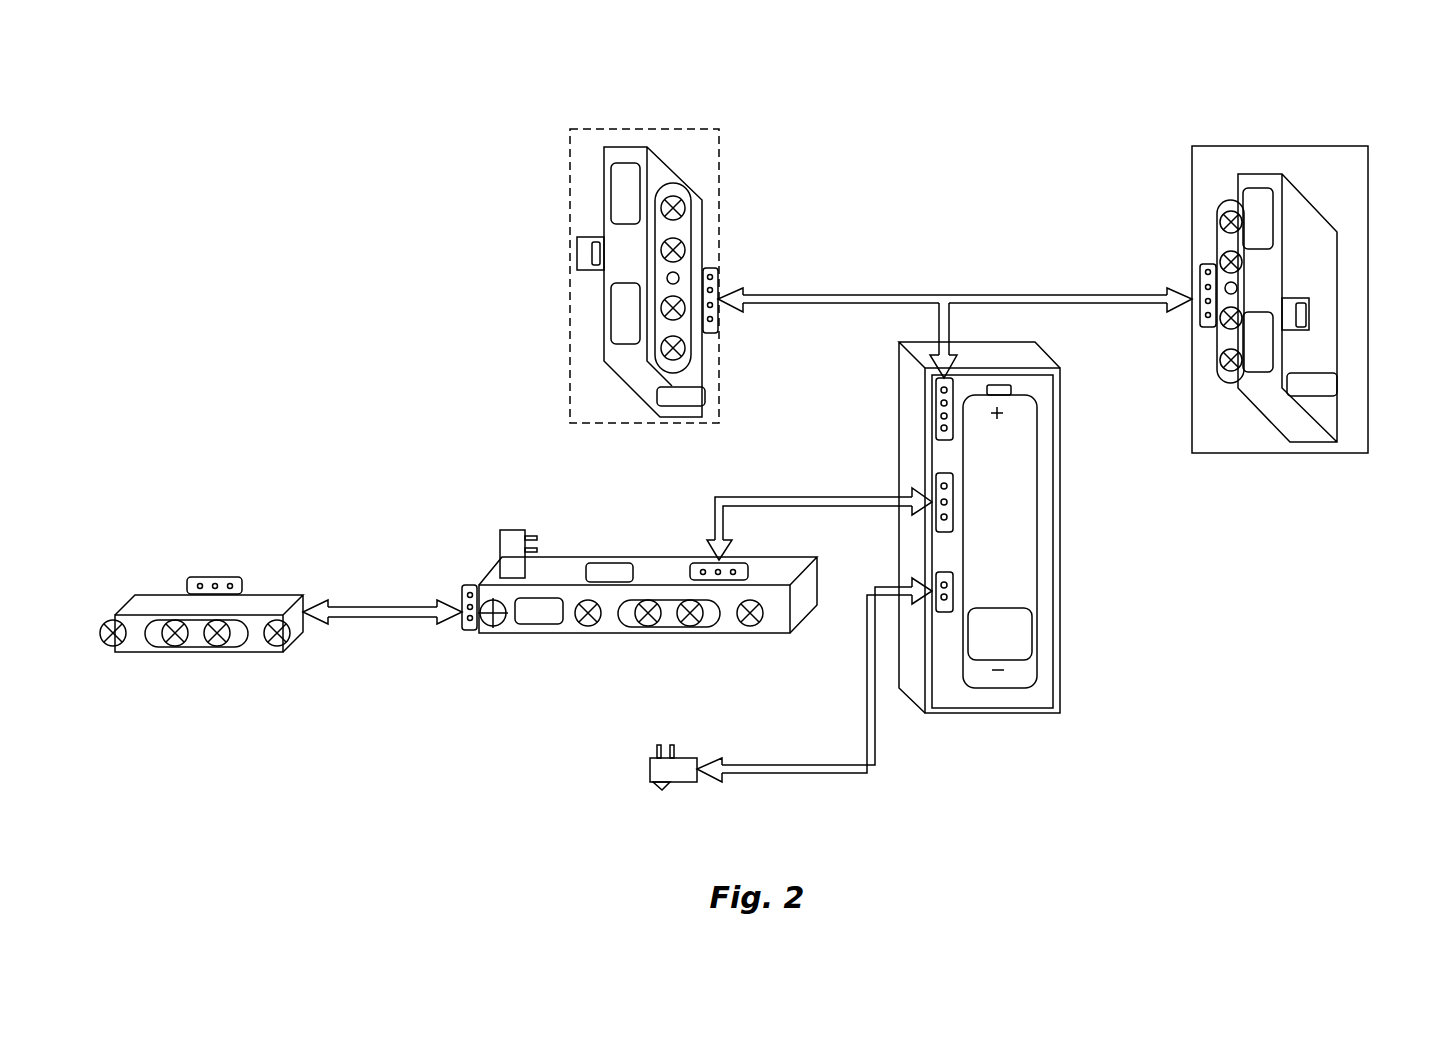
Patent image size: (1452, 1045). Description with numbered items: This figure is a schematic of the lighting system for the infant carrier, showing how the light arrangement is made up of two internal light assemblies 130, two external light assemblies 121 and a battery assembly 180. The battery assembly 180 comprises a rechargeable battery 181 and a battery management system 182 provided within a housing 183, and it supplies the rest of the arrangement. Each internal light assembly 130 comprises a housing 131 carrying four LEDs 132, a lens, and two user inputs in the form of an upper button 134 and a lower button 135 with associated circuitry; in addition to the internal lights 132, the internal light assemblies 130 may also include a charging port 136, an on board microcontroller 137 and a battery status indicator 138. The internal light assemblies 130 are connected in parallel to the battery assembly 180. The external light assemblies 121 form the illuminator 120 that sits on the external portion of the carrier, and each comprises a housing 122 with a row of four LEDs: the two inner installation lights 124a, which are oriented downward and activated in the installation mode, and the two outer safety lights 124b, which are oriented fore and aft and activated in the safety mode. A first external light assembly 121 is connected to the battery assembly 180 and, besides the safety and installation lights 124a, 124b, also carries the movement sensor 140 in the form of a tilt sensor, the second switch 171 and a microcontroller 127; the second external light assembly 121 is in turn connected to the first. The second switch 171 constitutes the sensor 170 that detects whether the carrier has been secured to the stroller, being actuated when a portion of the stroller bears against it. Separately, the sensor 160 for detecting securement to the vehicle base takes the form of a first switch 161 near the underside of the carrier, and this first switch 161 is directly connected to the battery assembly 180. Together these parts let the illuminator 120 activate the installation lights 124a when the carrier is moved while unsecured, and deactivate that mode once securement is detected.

The illuminator 120 is at (563, 697).
The external light assembly 121 is at (535, 675).
The housing 122 is at (675, 568).
The installation lights 124a is at (690, 626).
The safety lights 124b is at (588, 626).
The microcontroller 127 is at (607, 570).
The internal light assembly 130 is at (603, 118).
The housing 131 is at (657, 162).
The LEDs 132 is at (680, 250).
The upper button 134 is at (620, 196).
The lower button 135 is at (620, 312).
The charging port 136 is at (593, 252).
The on board microcontroller 137 is at (1325, 385).
The battery status indicator 138 is at (678, 278).
The movement sensor 140 is at (535, 613).
The sensor 160 is at (665, 800).
The first switch 161 is at (658, 770).
The sensor 170 is at (497, 543).
The second switch 171 is at (513, 530).
The battery assembly 180 is at (992, 730).
The rechargeable battery 181 is at (1042, 572).
The battery management system 182 is at (1010, 633).
The housing 183 is at (1063, 702).